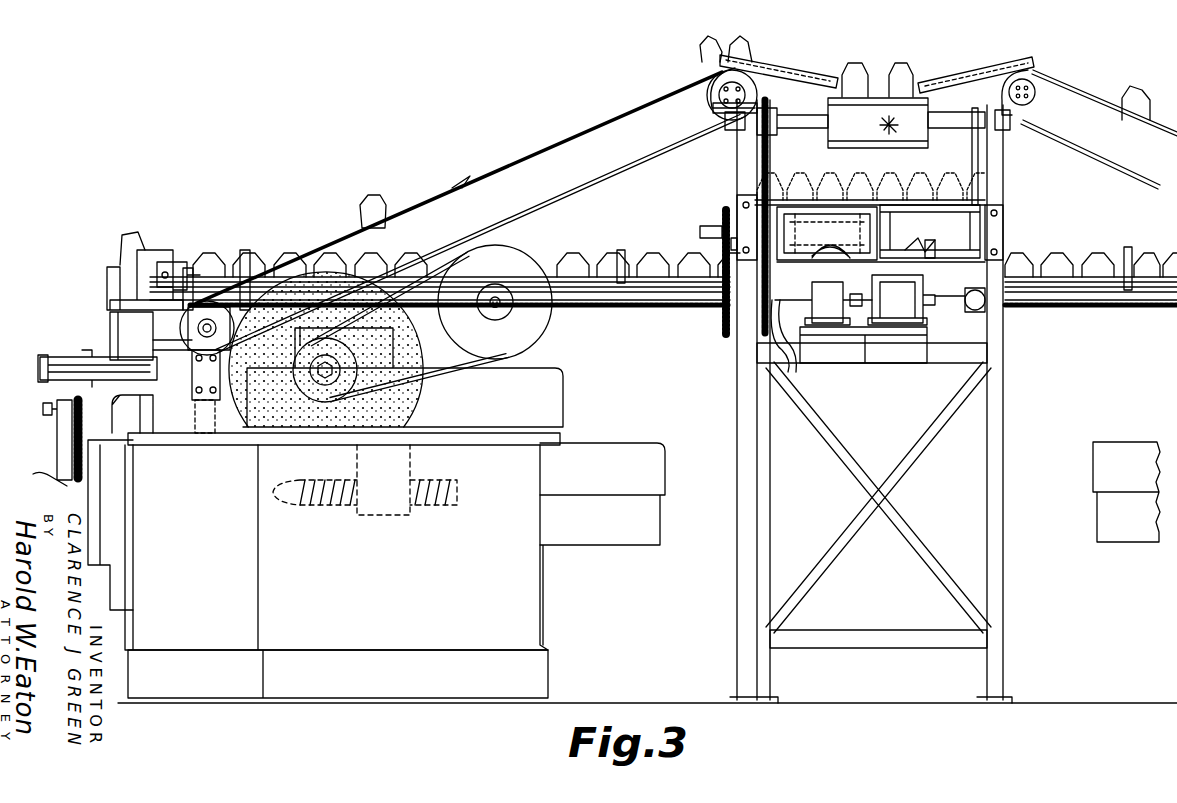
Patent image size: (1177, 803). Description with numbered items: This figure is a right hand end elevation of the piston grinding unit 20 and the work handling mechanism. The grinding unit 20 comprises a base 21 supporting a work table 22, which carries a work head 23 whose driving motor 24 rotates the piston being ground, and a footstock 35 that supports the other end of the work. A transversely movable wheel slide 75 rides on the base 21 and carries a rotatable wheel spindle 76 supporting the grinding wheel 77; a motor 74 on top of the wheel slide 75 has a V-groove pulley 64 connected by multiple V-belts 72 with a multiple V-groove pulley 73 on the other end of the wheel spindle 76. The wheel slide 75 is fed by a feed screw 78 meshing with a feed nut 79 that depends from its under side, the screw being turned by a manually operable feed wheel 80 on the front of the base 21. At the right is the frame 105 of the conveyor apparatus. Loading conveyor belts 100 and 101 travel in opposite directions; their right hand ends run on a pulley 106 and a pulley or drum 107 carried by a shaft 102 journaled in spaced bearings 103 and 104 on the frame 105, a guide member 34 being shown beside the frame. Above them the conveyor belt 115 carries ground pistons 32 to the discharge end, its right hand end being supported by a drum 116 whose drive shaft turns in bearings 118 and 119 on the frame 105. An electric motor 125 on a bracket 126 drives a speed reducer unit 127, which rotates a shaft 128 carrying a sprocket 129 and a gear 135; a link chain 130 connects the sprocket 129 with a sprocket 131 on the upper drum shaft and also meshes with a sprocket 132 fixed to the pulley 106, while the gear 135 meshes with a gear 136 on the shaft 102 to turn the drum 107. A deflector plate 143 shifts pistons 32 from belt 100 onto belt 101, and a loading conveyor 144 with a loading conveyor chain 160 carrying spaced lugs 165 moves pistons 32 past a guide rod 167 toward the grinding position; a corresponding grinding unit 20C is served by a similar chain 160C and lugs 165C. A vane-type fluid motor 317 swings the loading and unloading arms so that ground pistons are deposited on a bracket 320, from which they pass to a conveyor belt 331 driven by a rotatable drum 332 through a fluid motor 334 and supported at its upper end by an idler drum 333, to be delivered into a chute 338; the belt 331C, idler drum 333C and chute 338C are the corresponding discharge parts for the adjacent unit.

The piston grinding unit 20 is at (545, 581).
The adjacent machine base 20C is at (1096, 442).
The base 21 is at (543, 612).
The work table 22 is at (150, 410).
The work head 23 is at (188, 330).
The driving motor 24 is at (160, 255).
The pistons 32 is at (386, 186).
The guide plate 34 is at (980, 203).
The footstock 35 is at (180, 400).
The V-groove pulley 64 is at (495, 297).
The multiple V-belts 72 is at (480, 318).
The multiple V-groove pulley 73 is at (363, 391).
The motor 74 is at (541, 318).
The wheel slide 75 is at (560, 400).
The wheel spindle 76 is at (331, 378).
The grinding wheel 77 is at (299, 272).
The feed screw 78 is at (320, 506).
The feed nut 79 is at (385, 515).
The feed wheel 80 is at (55, 455).
The conveyor belt 100 is at (853, 252).
The conveyor belt 101 is at (930, 250).
The shaft 102 is at (718, 232).
The bearing 103 is at (745, 204).
The bearing 104 is at (1003, 216).
The frame 105 is at (1004, 394).
The pulley 106 is at (827, 252).
The pulley or drum 107 is at (901, 300).
The conveyor belt 115 is at (878, 123).
The drum 116 is at (948, 106).
The journaled bearing 118 is at (728, 122).
The journaled bearing 119 is at (1006, 126).
The electric motor 125 is at (910, 312).
The bracket 126 is at (893, 345).
The speed reducer unit 127 is at (823, 303).
The shaft 128 is at (801, 343).
The sprocket 129 is at (780, 382).
The link chain 130 is at (829, 198).
The sprocket 131 is at (776, 118).
The sprocket 132 is at (730, 244).
The gear 135 is at (727, 336).
The gear 136 is at (721, 214).
The deflector plate 143 is at (895, 205).
The loading conveyor 144 is at (593, 268).
The loading conveyor chain 160 is at (673, 308).
The conveyor rail 160C is at (1097, 306).
The spaced lugs 165 is at (634, 309).
The conveyor chain 165C is at (1160, 310).
The guide rod 167 is at (258, 262).
The vane-type fluid motor 317 is at (50, 360).
The bracket 320 is at (195, 258).
The conveyor belt 331 is at (562, 152).
The drive belt 331C is at (1089, 94).
The rotatable drum 332 is at (112, 326).
The idler drum 333 is at (708, 97).
The belt pulley 333C is at (1040, 96).
The fluid motor 334 is at (190, 345).
The chute 338 is at (783, 71).
The pivot arm 338C is at (985, 68).